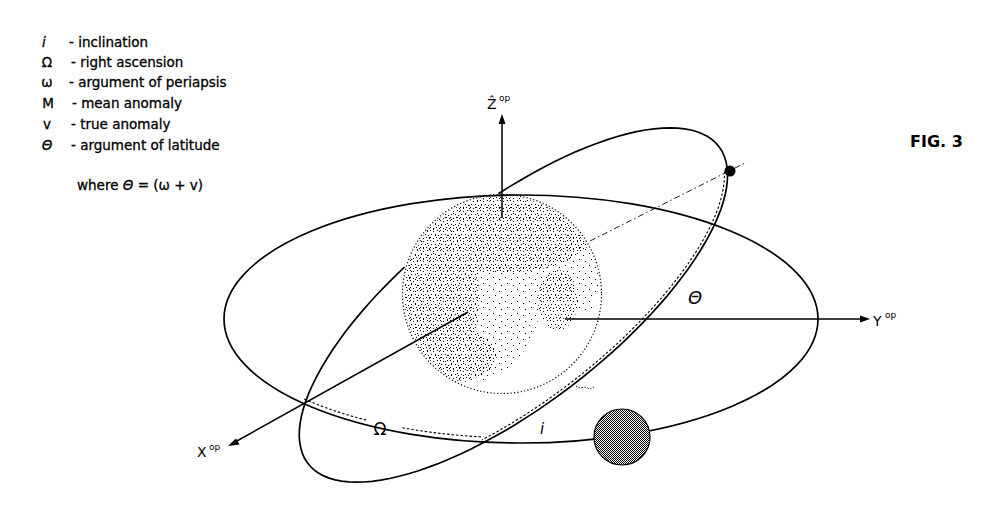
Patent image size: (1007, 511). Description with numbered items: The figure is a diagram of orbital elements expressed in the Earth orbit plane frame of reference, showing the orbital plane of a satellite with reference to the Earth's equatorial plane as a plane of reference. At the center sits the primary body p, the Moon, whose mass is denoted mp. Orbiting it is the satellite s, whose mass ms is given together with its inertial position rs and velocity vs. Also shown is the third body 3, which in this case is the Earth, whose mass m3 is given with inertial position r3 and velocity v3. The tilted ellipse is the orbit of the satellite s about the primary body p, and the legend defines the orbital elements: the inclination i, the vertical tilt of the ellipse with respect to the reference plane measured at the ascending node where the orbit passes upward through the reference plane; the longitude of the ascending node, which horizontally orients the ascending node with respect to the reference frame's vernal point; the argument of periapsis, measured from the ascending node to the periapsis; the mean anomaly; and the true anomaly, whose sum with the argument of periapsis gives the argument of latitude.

The third body 3 is at (659, 440).
The satellite s is at (698, 201).
The primary body p is at (500, 294).